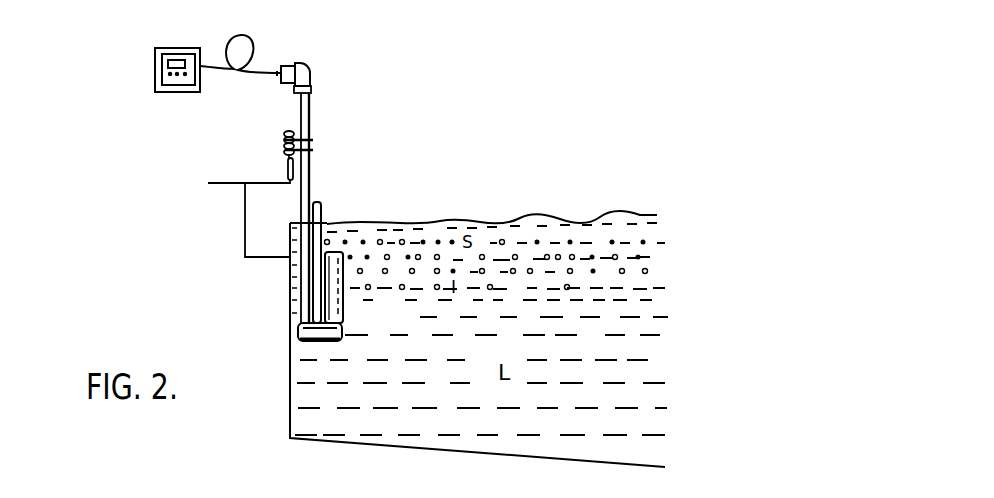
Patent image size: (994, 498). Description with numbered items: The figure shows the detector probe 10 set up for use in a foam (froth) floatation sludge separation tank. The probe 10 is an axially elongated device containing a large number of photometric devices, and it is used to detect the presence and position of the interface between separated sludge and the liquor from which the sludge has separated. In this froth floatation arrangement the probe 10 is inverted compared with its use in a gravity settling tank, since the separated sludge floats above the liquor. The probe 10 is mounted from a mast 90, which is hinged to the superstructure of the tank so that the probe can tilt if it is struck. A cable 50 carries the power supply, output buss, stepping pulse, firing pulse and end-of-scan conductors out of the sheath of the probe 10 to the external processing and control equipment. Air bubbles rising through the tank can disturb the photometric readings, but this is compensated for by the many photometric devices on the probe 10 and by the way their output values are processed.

The detector probe 10 is at (343, 302).
The cable 50 is at (273, 63).
The mast 90 is at (308, 124).